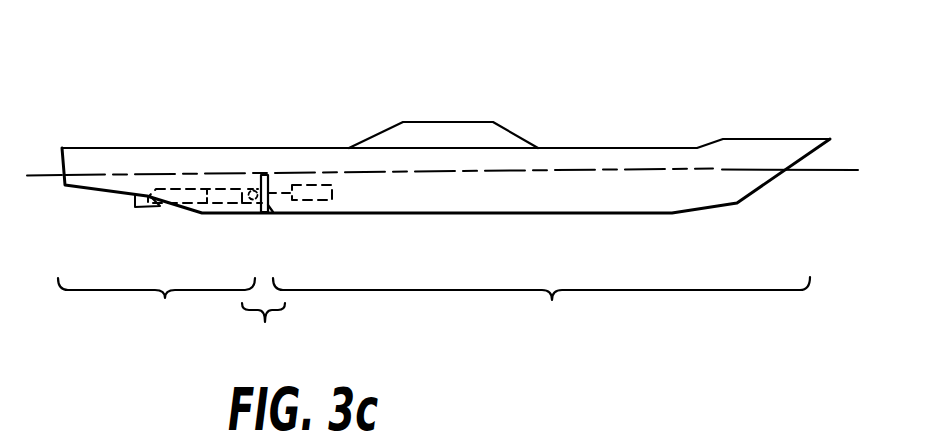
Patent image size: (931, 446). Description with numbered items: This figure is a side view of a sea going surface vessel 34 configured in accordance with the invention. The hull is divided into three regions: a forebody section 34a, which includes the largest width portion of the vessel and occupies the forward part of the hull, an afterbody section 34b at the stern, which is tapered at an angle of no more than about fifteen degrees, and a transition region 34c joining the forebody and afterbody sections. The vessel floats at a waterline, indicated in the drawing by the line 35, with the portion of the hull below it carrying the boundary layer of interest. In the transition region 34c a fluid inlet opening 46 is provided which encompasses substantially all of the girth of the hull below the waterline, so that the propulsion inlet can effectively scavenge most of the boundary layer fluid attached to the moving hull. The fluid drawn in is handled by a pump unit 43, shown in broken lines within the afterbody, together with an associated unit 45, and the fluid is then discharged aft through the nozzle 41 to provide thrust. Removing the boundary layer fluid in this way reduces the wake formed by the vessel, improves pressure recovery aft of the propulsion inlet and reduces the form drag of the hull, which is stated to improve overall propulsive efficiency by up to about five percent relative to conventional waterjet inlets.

The vessel 34 is at (567, 148).
The waterline 35 is at (667, 168).
The nozzle 41 is at (142, 207).
The pump unit 43 is at (223, 202).
The fluid inlet opening 46 is at (273, 208).
The drive unit 45 is at (323, 203).
The afterbody section 34b is at (156, 311).
The transition region 34c is at (272, 337).
The forebody section 34a is at (541, 311).